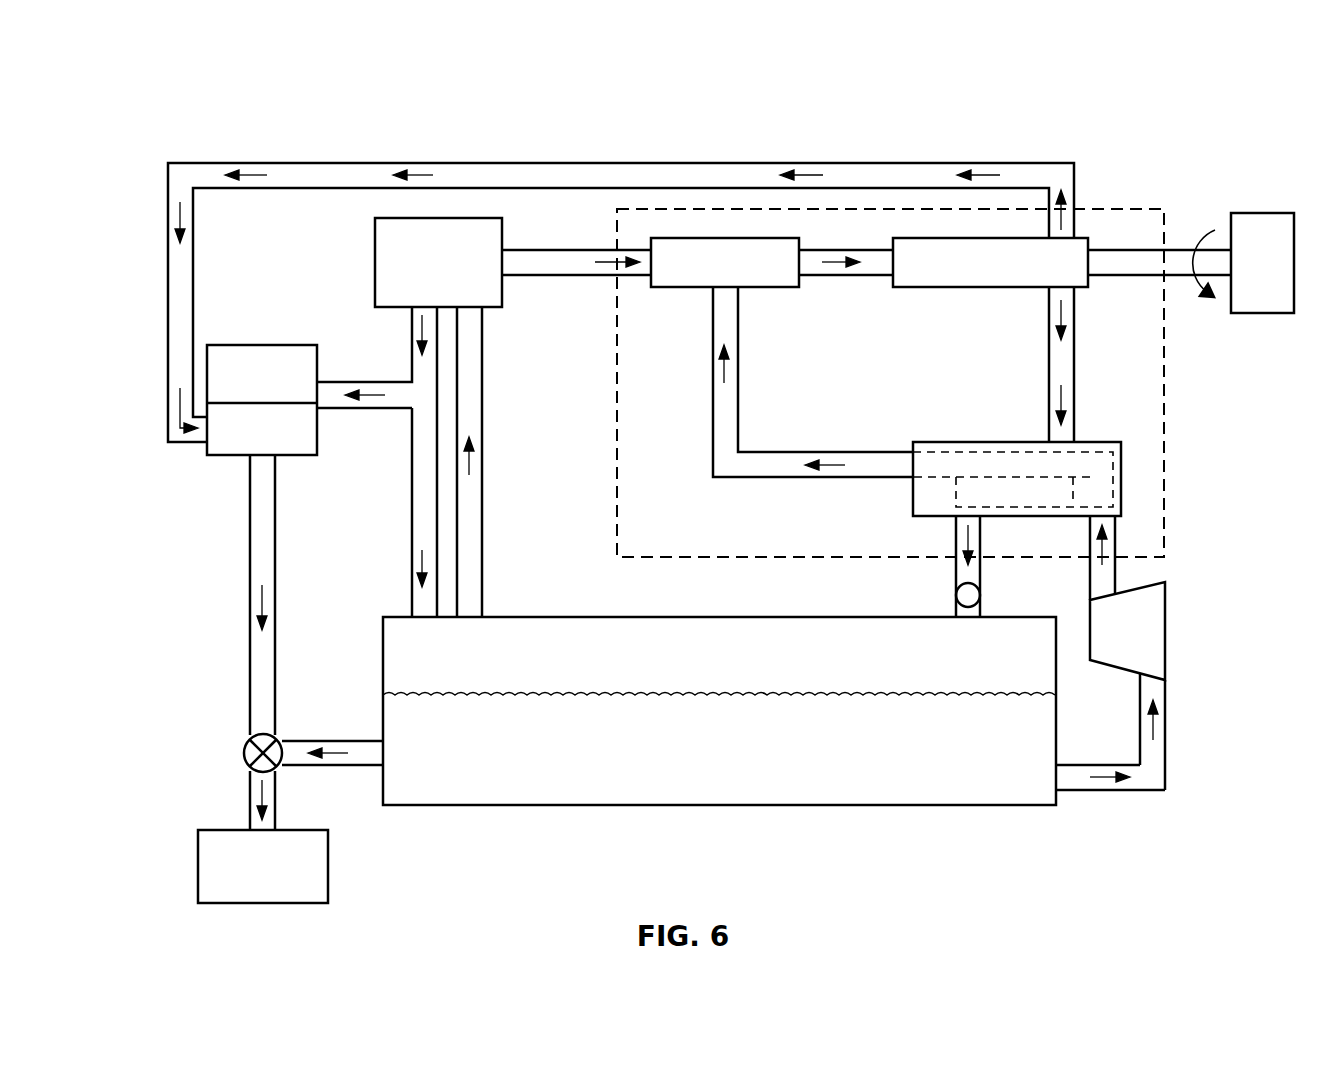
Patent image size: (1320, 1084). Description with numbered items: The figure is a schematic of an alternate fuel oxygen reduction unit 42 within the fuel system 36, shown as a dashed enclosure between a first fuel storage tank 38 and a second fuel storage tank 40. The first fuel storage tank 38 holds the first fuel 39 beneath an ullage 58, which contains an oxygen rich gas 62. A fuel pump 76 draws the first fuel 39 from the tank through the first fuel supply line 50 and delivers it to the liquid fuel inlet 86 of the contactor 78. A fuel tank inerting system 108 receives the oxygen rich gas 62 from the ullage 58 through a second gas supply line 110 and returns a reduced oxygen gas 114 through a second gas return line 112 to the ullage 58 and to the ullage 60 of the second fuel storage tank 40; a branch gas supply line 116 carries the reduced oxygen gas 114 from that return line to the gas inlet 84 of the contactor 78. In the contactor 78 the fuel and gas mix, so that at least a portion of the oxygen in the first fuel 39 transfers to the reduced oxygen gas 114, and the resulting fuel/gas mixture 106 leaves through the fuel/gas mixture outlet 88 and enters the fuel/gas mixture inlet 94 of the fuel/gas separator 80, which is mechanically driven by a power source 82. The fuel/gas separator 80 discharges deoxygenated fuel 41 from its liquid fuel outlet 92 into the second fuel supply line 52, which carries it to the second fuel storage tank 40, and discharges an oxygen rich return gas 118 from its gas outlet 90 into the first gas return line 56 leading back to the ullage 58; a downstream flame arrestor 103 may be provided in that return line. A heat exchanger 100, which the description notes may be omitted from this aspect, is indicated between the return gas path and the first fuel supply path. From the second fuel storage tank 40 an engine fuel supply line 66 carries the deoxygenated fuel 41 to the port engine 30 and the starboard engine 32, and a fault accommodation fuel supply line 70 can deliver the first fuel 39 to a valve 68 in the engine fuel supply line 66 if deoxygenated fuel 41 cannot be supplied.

The port engine 30 is at (330, 866).
The starboard engine 32 is at (328, 862).
The fuel system 36 is at (855, 82).
The first fuel storage tank 38 is at (910, 805).
The first fuel 39 is at (1108, 548).
The second fuel storage tank 40 is at (232, 455).
The deoxygenated fuel 41 is at (424, 175).
The fuel oxygen reduction unit 42 is at (646, 196).
The first fuel supply line 50 is at (1165, 740).
The second fuel supply line 52 is at (700, 163).
The first gas return line 56 is at (950, 540).
The ullage 58 is at (537, 626).
The ullage 60 is at (254, 366).
The oxygen rich gas 62 is at (478, 455).
The engine fuel supply line 66 is at (250, 593).
The valve 68 is at (245, 752).
The fault accommodation fuel supply line 70 is at (298, 741).
The fuel pump 76 is at (1165, 634).
The contactor 78 is at (781, 240).
The fuel/gas separator 80 is at (920, 290).
The power source 82 is at (1191, 263).
The gas inlet 84 is at (642, 280).
The liquid fuel inlet 86 is at (718, 304).
The fuel/gas mixture outlet 88 is at (810, 282).
The gas outlet 90 is at (1076, 302).
The liquid fuel outlet 92 is at (1073, 212).
The fuel/gas mixture inlet 94 is at (886, 283).
The heat exchanger 100 is at (1121, 462).
The downstream flame arrestor 103 is at (955, 592).
The fuel/gas mixture 106 is at (838, 277).
The fuel tank inerting system 108 is at (375, 255).
The second gas supply line 110 is at (485, 505).
The second gas return line 112 is at (438, 402).
The reduced oxygen gas 114 is at (600, 260).
The branch gas supply line 116 is at (528, 276).
The oxygen rich return gas 118 is at (1055, 310).